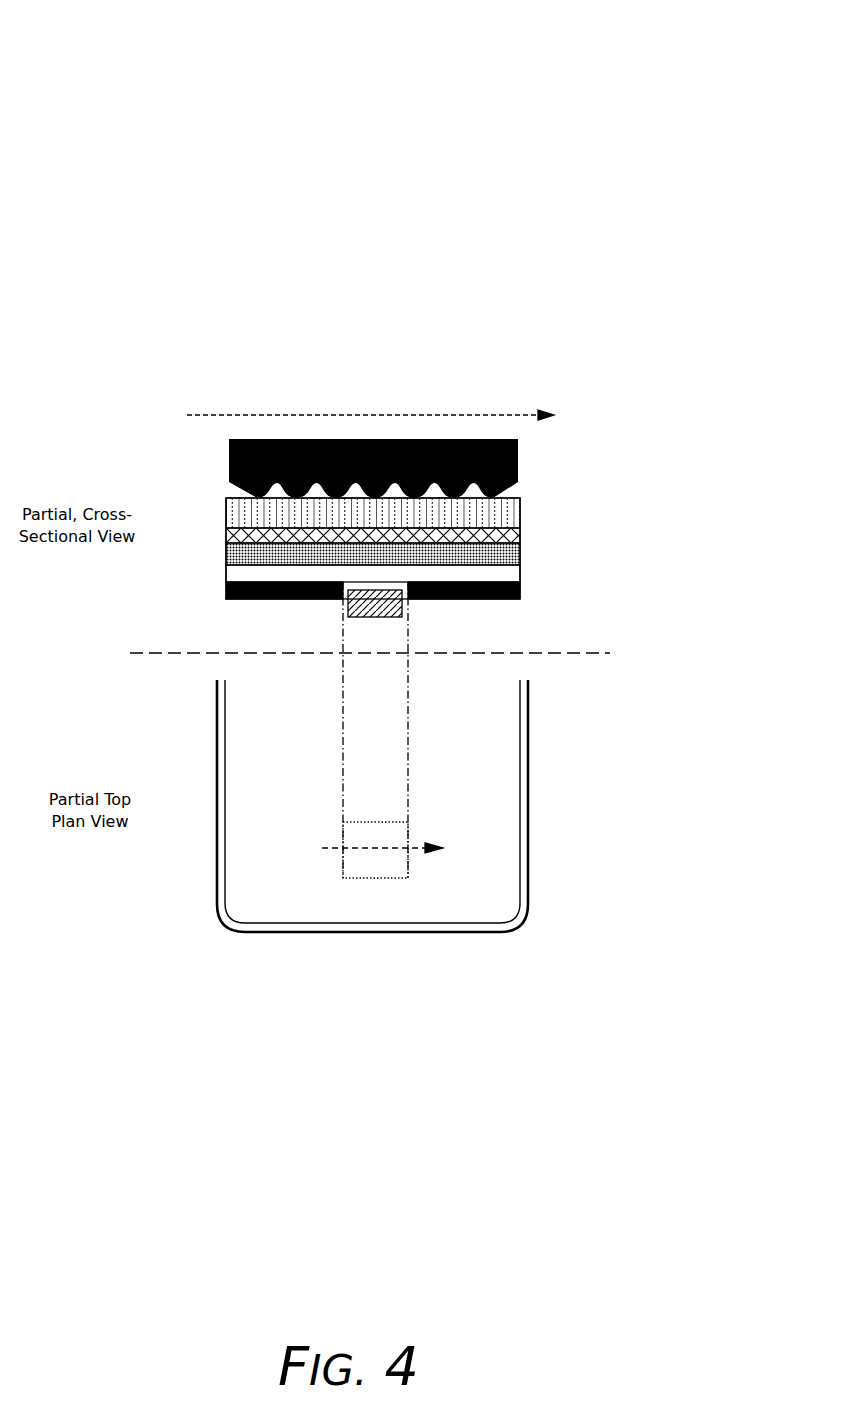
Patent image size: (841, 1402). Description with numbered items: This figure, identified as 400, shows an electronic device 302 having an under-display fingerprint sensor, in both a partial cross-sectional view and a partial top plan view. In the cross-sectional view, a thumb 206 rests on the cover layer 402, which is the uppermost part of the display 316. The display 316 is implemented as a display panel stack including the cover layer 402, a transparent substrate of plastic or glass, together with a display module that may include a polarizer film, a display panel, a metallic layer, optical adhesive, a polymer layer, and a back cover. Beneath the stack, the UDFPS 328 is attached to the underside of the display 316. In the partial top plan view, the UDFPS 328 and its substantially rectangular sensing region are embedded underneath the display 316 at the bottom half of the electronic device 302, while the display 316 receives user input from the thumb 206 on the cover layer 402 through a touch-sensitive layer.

The scanning arrangement 400 is at (697, 42).
The thumb 206 is at (518, 462).
The cover layer 402 is at (226, 511).
The display 316 is at (524, 498).
The UDFPS 328 is at (402, 608).
The electronic device 302 is at (533, 802).